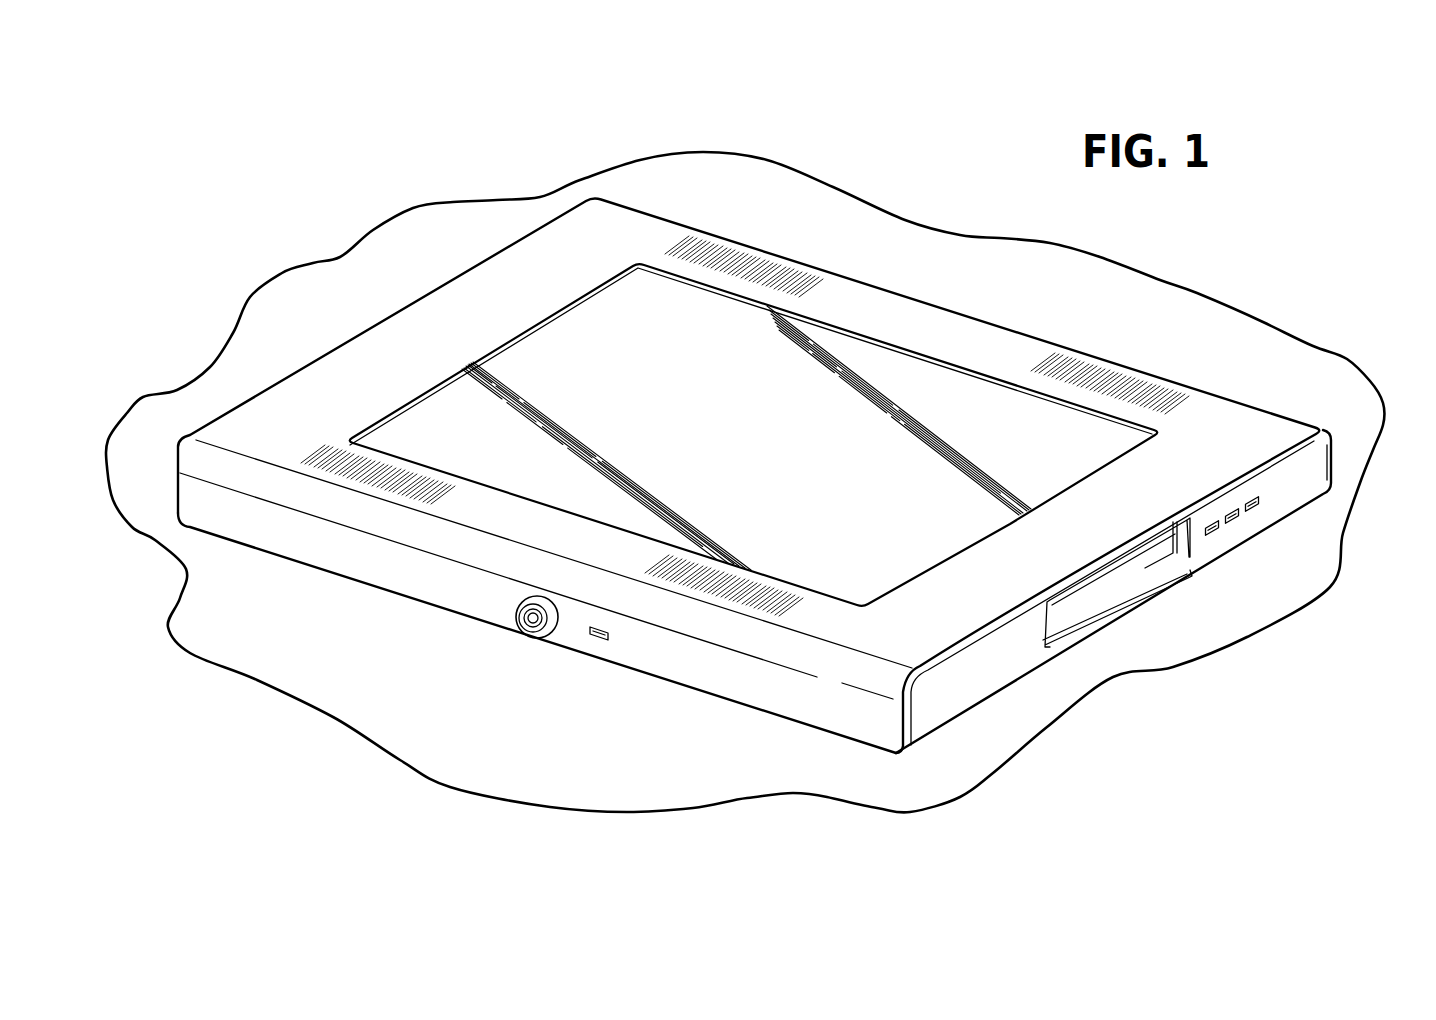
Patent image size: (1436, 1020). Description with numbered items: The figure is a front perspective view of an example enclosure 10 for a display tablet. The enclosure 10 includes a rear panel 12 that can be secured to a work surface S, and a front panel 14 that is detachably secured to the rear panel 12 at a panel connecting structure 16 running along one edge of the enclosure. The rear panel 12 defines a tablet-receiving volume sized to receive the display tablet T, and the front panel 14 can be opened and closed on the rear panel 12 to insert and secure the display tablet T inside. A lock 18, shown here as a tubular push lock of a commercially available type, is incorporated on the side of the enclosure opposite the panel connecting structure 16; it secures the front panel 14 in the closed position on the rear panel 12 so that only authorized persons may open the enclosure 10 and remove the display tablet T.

The enclosure 10 is at (900, 116).
The rear panel 12 is at (1010, 686).
The front panel 14 is at (950, 657).
The panel connecting structure 16 is at (1340, 492).
The lock 18 is at (530, 620).
The display tablet T is at (612, 332).
The work surface S is at (420, 743).